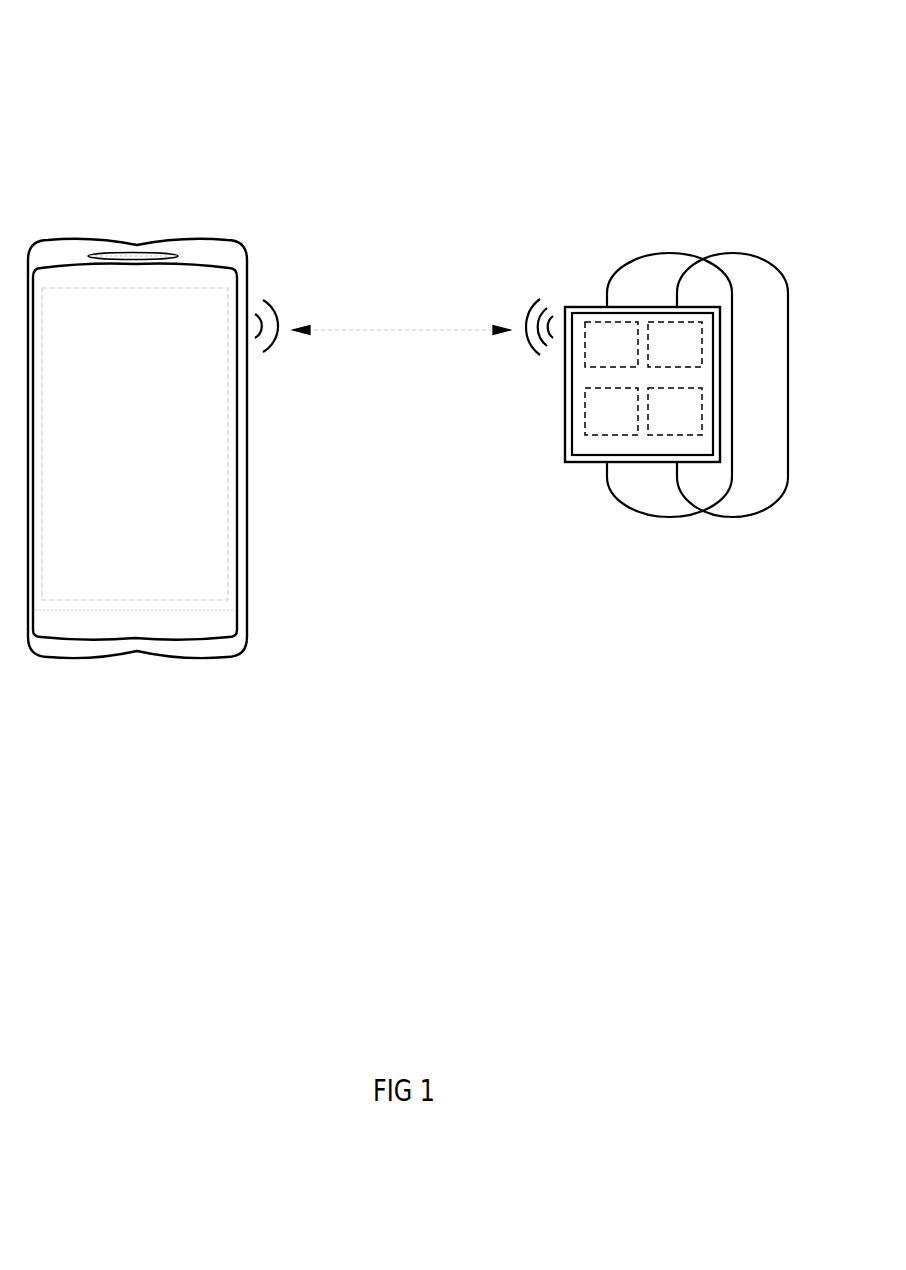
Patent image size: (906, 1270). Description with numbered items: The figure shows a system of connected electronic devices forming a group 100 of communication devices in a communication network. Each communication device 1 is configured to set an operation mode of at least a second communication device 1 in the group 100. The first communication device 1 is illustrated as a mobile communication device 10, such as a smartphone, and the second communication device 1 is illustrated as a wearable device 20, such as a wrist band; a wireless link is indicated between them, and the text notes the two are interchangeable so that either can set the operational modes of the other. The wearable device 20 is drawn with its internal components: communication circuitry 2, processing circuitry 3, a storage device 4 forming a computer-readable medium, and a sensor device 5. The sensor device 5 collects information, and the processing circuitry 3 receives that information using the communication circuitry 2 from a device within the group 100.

The group of connected communication devices 100 is at (352, 100).
The communication device 1 is at (408, 414).
The mobile communication device 10 is at (177, 229).
The wearable device 20 is at (634, 245).
The communication circuitry 2 is at (611, 344).
The processing circuitry 3 is at (675, 344).
The storage device 4 is at (611, 411).
The sensor device 5 is at (675, 411).